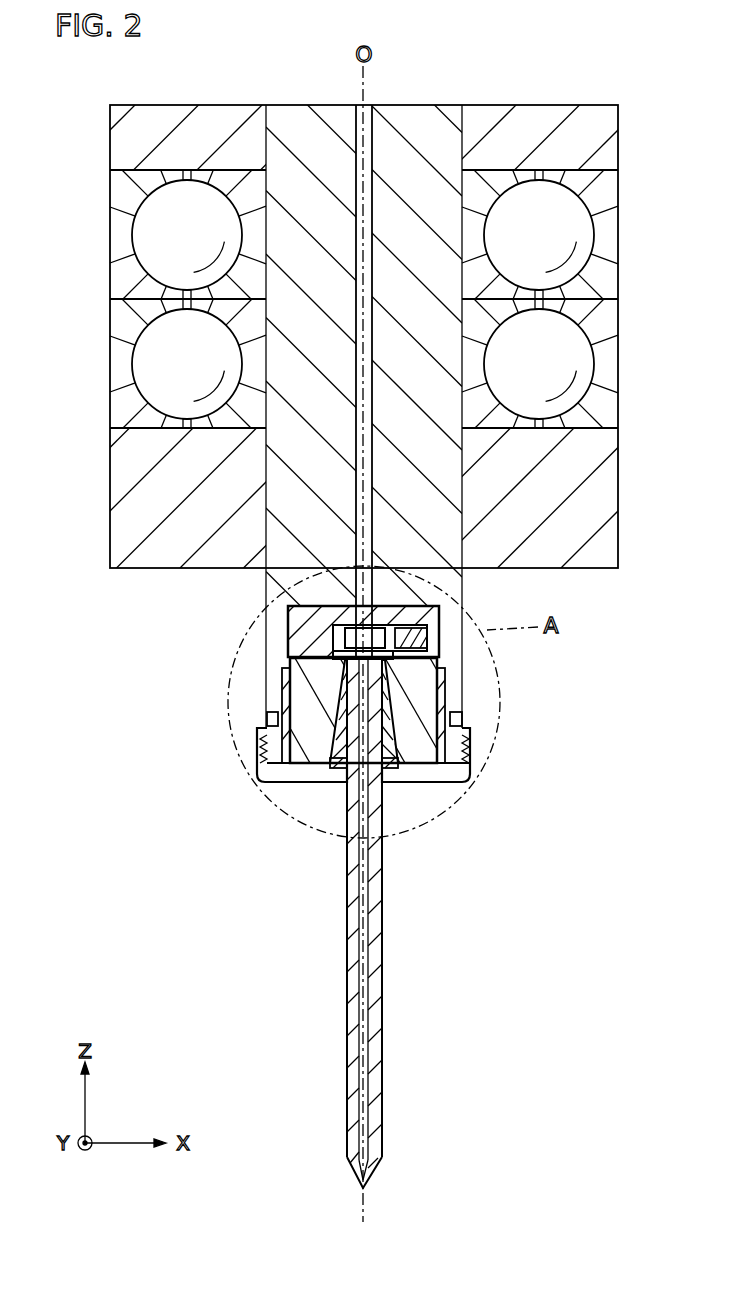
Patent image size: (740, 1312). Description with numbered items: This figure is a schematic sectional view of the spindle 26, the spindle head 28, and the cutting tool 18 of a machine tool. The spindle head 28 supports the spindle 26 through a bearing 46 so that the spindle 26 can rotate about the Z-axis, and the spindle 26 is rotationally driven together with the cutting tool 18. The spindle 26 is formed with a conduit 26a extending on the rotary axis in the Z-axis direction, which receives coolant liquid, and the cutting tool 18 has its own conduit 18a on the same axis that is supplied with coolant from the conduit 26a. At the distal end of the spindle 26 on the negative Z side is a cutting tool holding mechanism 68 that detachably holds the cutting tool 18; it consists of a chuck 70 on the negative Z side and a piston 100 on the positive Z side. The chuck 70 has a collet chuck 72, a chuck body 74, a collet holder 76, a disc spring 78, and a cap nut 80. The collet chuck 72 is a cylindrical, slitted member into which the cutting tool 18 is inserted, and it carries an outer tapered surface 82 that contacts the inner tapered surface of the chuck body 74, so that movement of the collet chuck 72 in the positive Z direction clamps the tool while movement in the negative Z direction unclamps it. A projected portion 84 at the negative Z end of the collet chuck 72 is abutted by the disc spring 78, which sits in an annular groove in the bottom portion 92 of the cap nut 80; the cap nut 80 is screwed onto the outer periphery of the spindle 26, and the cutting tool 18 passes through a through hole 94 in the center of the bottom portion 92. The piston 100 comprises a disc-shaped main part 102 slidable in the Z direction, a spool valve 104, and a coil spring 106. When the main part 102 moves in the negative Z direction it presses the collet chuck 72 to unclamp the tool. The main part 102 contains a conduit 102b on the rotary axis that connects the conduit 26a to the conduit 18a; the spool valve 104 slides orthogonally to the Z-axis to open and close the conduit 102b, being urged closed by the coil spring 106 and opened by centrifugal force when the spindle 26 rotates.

The cutting tool 18 is at (382, 992).
The conduit 18a is at (362, 1080).
The spindle 26 is at (414, 130).
The conduit 26a is at (374, 222).
The spindle head 28 is at (120, 470).
The bearing 46 is at (120, 232).
The cutting tool holding mechanism 68 is at (280, 606).
The chuck 70 is at (280, 680).
The collet chuck 72 is at (270, 724).
The chuck body 74 is at (288, 705).
The collet holder 76 is at (446, 675).
The disc spring 78 is at (345, 775).
The cap nut 80 is at (450, 775).
The tapered surface 82 is at (456, 722).
The projected portion 84 is at (334, 764).
The bottom portion 92 is at (418, 768).
The through hole 94 is at (390, 770).
The piston 100 is at (287, 633).
The main part 102 is at (313, 610).
The conduit 102b is at (368, 604).
The spool valve 104 is at (380, 612).
The coil spring 106 is at (446, 598).